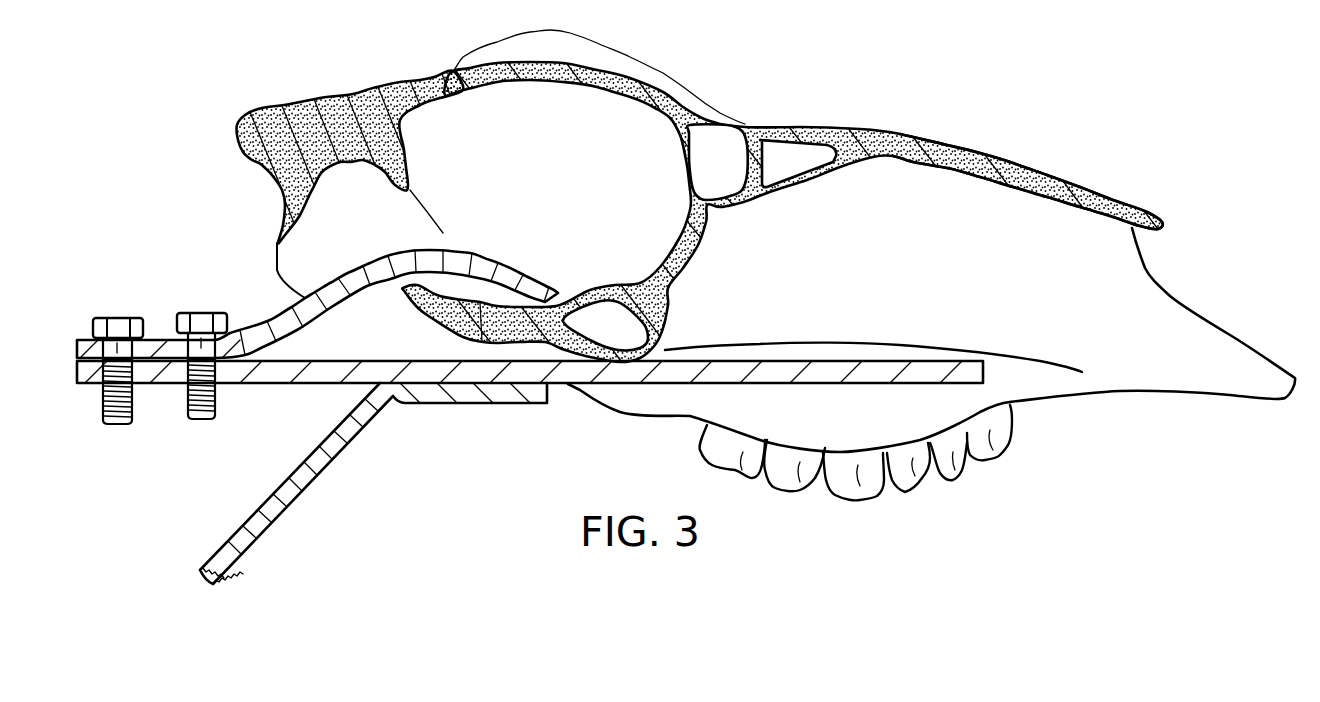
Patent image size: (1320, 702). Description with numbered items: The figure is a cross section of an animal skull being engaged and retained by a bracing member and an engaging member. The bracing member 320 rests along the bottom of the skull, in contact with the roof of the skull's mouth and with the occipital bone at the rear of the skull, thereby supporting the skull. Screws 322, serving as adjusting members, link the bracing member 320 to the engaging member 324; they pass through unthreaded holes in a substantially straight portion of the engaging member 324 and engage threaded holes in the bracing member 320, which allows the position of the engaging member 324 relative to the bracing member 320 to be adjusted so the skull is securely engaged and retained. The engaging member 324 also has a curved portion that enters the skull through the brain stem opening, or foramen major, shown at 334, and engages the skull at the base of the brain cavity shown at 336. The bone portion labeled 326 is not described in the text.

The bracing member 320 is at (265, 386).
The screws 322 is at (115, 318).
The engaging member 324 is at (478, 250).
The nasal bone 326 is at (962, 148).
The brain stem opening (foramen major) 334 is at (276, 264).
The base of the brain cavity 336 is at (597, 180).